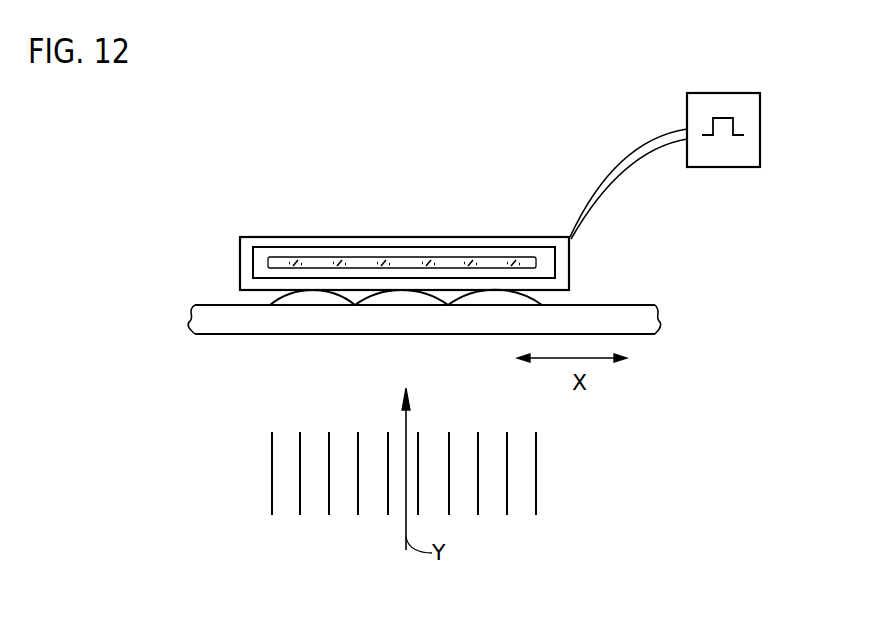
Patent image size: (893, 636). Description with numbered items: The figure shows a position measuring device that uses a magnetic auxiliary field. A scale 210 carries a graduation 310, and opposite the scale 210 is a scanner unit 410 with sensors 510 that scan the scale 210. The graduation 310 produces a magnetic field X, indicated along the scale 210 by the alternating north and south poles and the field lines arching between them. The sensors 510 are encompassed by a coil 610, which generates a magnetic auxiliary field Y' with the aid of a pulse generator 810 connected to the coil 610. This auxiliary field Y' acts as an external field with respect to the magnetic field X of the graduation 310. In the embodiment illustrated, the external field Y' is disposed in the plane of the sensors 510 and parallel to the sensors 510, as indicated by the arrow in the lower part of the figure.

The coil 610 is at (258, 243).
The sensors 510 is at (328, 257).
The scanner unit 410 is at (536, 264).
The graduation 310 is at (547, 303).
The scale 210 is at (648, 325).
The pulse generator 810 is at (750, 168).